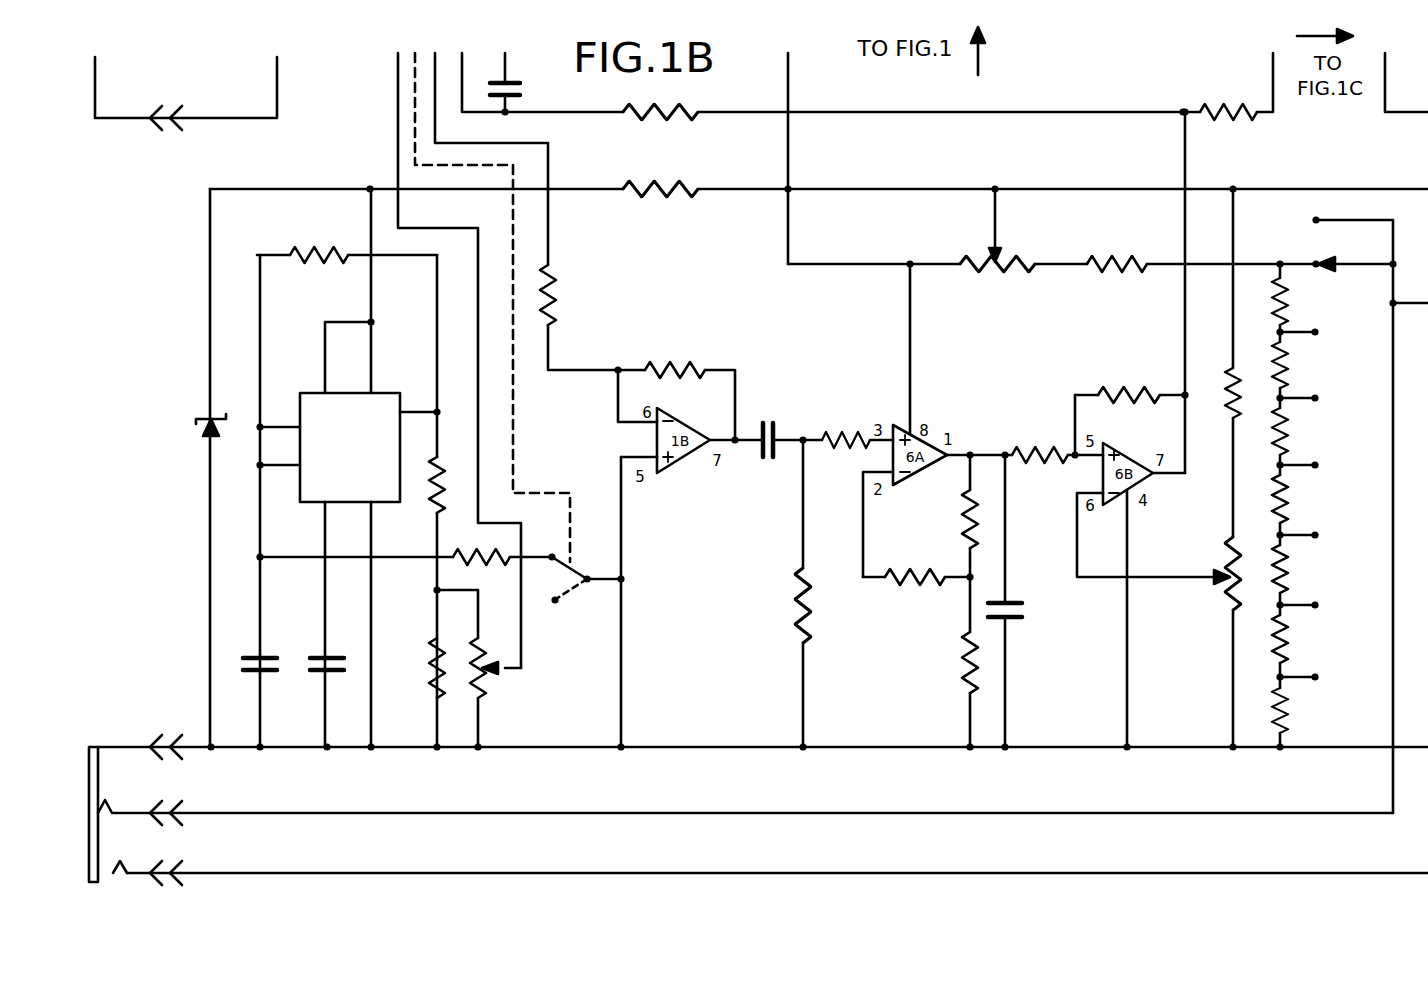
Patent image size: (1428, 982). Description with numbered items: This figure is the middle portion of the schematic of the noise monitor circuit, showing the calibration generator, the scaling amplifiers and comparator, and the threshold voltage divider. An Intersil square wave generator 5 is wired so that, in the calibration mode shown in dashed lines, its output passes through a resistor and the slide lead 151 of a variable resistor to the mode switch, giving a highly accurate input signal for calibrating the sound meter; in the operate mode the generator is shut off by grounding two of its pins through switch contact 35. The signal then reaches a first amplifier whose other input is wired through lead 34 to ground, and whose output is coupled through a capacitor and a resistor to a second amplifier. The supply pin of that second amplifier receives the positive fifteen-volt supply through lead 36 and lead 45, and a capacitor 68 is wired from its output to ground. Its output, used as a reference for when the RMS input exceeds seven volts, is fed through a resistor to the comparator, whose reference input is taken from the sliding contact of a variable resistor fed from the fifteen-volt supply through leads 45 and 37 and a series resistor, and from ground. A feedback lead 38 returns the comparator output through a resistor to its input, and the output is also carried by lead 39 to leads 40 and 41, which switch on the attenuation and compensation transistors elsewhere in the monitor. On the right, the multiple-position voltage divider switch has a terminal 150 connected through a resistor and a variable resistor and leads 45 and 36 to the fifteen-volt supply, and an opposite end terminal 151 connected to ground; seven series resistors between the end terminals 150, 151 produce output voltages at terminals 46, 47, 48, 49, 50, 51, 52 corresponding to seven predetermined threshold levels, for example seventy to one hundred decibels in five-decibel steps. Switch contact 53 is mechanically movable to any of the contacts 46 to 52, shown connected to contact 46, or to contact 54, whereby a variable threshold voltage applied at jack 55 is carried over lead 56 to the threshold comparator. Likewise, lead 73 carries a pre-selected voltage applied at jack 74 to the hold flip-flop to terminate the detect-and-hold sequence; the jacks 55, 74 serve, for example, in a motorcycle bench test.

The square wave generator 5 is at (348, 468).
The lead 34 is at (623, 530).
The switch contact 35 is at (552, 556).
The lead 36 is at (934, 262).
The lead 37 is at (903, 188).
The feedback lead 38 is at (1075, 394).
The lead 39 is at (1184, 303).
The lead 40 is at (1116, 111).
The lead 41 is at (1189, 111).
The lead 45 is at (787, 151).
The contact 46 is at (1316, 262).
The contact 47 is at (1318, 332).
The contact 48 is at (1318, 398).
The contact 49 is at (1318, 465).
The contact 50 is at (1318, 535).
The contact 51 is at (1318, 605).
The contact 52 is at (1318, 677).
The switch contact 53 is at (1352, 262).
The contact 54 is at (1316, 219).
The jack 55 is at (95, 789).
The lead 56 is at (885, 812).
The capacitor 68 is at (1024, 612).
The lead 73 is at (930, 872).
The jack 74 is at (96, 851).
The terminal 150 is at (1278, 262).
The end terminal 151 is at (528, 655).